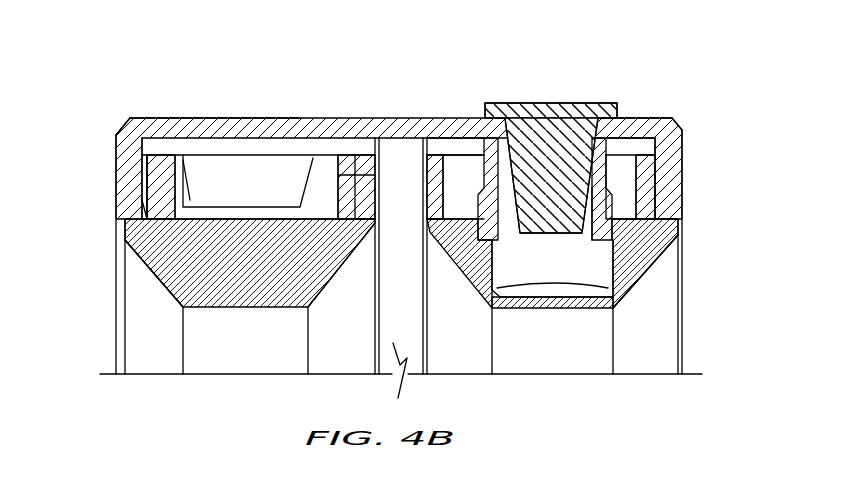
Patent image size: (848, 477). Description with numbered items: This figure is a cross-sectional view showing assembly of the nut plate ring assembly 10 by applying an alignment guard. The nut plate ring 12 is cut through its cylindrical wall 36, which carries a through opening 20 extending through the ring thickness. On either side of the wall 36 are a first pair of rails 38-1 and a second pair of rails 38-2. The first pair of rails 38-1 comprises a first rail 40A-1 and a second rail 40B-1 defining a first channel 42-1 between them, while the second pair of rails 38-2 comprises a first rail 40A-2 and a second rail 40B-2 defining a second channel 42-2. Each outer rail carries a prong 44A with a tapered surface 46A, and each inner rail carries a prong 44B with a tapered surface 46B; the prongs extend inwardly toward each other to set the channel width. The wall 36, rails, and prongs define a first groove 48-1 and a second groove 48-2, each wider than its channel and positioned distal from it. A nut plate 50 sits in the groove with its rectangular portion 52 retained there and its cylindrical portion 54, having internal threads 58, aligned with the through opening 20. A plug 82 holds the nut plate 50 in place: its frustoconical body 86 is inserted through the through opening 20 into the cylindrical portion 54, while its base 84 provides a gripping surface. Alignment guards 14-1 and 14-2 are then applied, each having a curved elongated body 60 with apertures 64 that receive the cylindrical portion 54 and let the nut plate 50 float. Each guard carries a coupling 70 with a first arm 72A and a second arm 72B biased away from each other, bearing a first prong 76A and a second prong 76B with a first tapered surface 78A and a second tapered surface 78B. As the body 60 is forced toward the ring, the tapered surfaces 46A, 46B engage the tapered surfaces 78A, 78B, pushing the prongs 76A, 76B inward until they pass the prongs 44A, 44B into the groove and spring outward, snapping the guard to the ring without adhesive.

The nut plate ring assembly 10 is at (755, 120).
The nut plate ring 12 is at (683, 152).
The alignment guard 14-1 is at (140, 266).
The alignment guard 14-2 is at (648, 262).
The through opening 20 is at (617, 130).
The cylindrical wall 36 is at (400, 128).
The first pair of rails 38-1 is at (106, 190).
The second pair of rails 38-2 is at (692, 201).
The first rail 40A-1 is at (150, 168).
The first rail 40A-2 is at (676, 170).
The second rail 40B-1 is at (362, 152).
The second rail 40B-2 is at (440, 150).
The first channel 42-1 is at (133, 211).
The second channel 42-2 is at (658, 193).
The prong 44A is at (128, 178).
The prong 44B is at (370, 150).
The tapered surface 46A is at (198, 170).
The tapered surface 46B is at (355, 193).
The first groove 48-1 is at (163, 120).
The second groove 48-2 is at (652, 122).
The nut plate 50 is at (662, 243).
The rectangular portion 52 is at (257, 147).
The cylindrical portion 54 is at (155, 258).
The internal threads 58 is at (588, 240).
The curved elongated body 60 is at (243, 350).
The aperture 64 is at (625, 280).
The coupling 70 is at (336, 210).
The first arm 72A is at (137, 243).
The second arm 72B is at (323, 277).
The first prong 76A is at (143, 170).
The second prong 76B is at (346, 168).
The first tapered surface 78A is at (140, 175).
The second tapered surface 78B is at (361, 165).
The plug 82 is at (572, 93).
The base 84 is at (520, 103).
The frustoconical body 86 is at (542, 236).